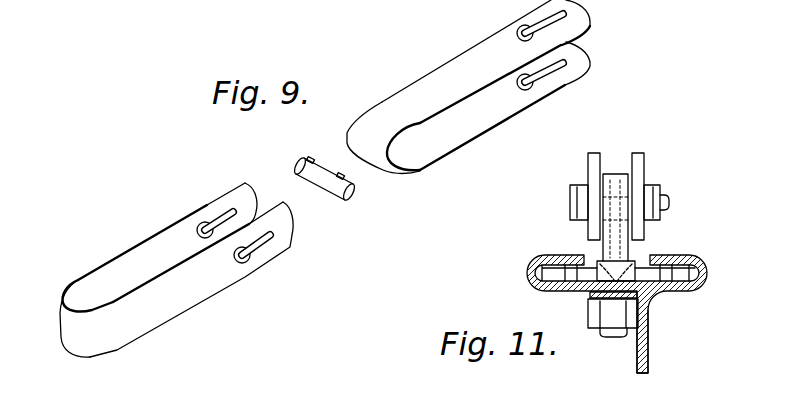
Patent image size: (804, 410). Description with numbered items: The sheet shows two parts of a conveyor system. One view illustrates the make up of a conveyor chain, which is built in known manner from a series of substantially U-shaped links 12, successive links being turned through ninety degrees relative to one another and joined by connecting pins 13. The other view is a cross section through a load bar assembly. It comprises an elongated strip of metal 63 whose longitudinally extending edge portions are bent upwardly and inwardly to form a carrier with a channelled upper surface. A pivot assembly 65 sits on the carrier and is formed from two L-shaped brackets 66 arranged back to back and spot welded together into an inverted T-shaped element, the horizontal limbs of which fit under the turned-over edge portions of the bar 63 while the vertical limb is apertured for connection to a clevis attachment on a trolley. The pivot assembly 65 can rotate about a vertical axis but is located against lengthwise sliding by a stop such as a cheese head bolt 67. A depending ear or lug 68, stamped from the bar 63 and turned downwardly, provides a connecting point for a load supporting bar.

In FIG. 9, the U-shaped link 12 is at (437, 75).
In FIG. 9, the connecting pin 13 is at (323, 194).
In FIG. 11, the elongated strip of metal 63 is at (663, 293).
In FIG. 11, the pivot assembly 65 is at (642, 250).
In FIG. 11, the L-shaped bracket 66 is at (618, 239).
In FIG. 11, the cheese head bolt 67 is at (597, 296).
In FIG. 11, the depending ear or lug 68 is at (648, 353).